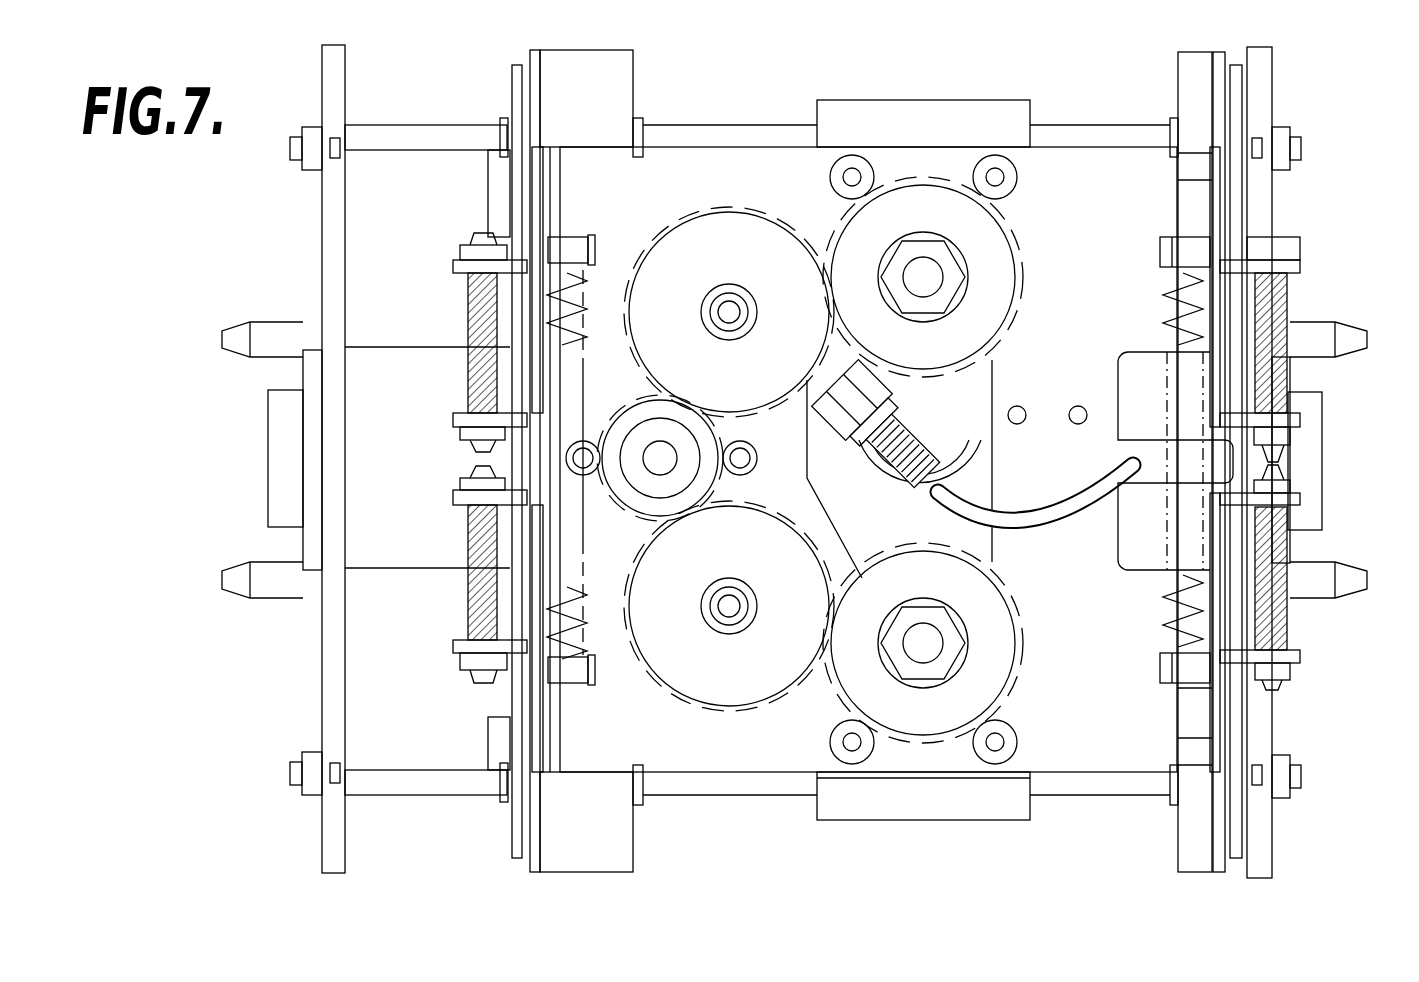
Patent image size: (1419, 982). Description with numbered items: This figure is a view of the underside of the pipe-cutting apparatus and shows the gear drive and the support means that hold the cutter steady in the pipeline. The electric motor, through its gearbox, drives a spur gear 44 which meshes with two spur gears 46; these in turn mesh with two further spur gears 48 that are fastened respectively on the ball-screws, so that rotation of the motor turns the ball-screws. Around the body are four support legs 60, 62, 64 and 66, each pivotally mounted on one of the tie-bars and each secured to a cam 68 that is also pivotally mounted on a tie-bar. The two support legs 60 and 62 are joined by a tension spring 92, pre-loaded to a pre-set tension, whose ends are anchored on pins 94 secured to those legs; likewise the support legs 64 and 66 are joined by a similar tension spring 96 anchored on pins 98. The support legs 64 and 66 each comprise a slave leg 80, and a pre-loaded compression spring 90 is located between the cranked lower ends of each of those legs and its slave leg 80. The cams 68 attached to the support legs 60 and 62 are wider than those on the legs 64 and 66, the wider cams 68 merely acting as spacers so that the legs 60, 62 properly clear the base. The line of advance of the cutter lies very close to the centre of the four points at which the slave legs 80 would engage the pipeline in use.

The spur gear 44 is at (583, 447).
The spur gears 46 is at (737, 245).
The further spur gears 48 is at (973, 225).
The support leg 60 is at (470, 361).
The support leg 62 is at (533, 603).
The support leg 64 is at (1290, 372).
The support leg 66 is at (1288, 557).
The cam 68 is at (608, 79).
The slave leg 80 is at (510, 173).
The compression spring 90 is at (470, 283).
The tension spring 92 is at (470, 540).
The pins 94 is at (592, 242).
The tension spring 96 is at (1170, 600).
The pins 98 is at (1160, 245).